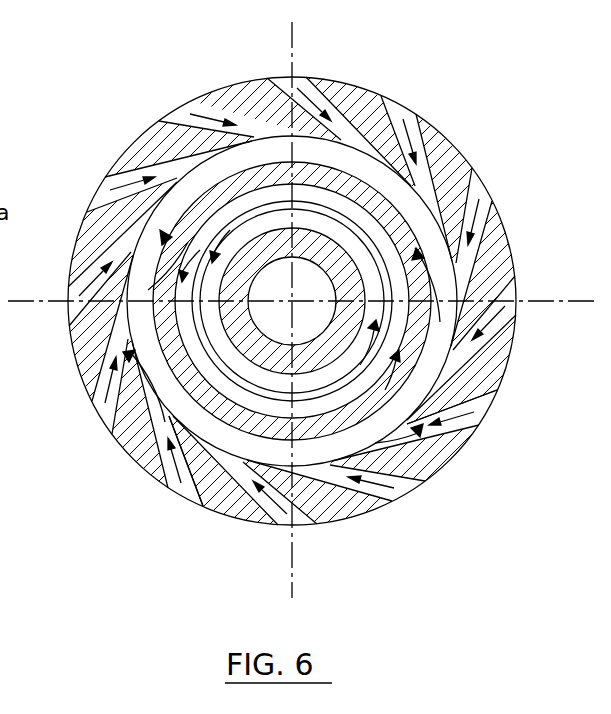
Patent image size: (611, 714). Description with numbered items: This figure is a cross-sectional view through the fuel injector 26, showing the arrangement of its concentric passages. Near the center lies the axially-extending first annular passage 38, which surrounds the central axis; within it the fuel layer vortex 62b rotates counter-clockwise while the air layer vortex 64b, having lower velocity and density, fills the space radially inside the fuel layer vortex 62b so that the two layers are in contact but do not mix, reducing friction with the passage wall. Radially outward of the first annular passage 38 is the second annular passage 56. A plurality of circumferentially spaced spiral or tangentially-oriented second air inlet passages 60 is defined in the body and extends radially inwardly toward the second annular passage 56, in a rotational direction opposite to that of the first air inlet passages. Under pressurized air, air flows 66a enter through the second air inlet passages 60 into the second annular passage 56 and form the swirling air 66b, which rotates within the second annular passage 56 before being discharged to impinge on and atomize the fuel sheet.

The fuel injector 26 is at (529, 228).
The first annular passage 38 is at (387, 248).
The second annular passage 56 is at (355, 150).
The second air inlet passages 60 is at (108, 197).
The fuel layer vortex 62b is at (372, 385).
The air layer vortex 64b is at (142, 135).
The air flows 66a is at (182, 455).
The swirling air 66b is at (470, 392).